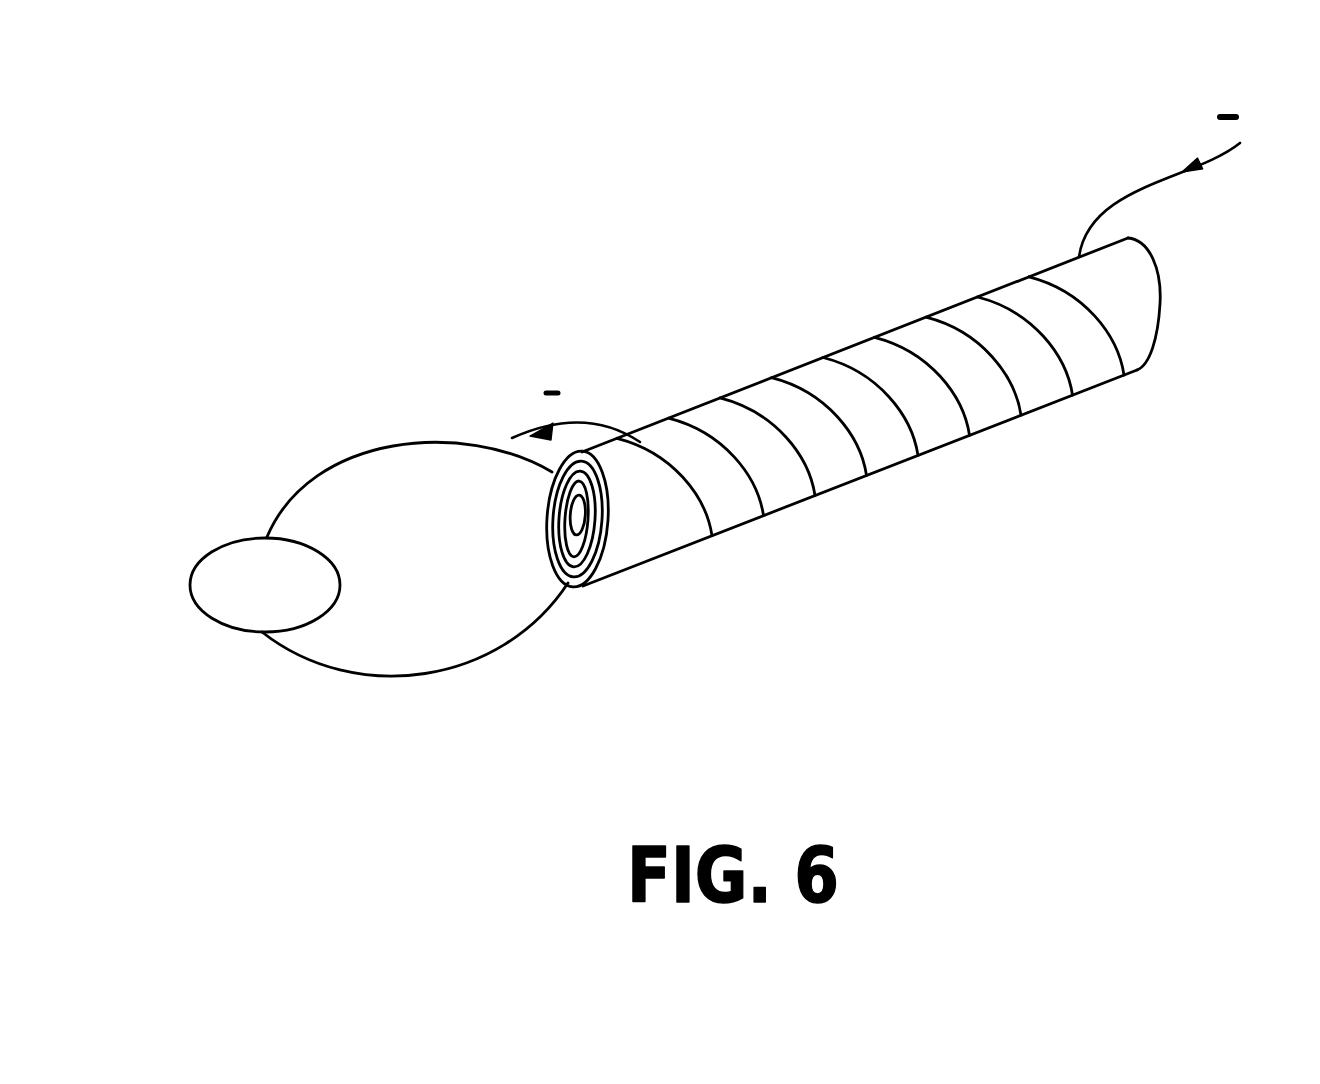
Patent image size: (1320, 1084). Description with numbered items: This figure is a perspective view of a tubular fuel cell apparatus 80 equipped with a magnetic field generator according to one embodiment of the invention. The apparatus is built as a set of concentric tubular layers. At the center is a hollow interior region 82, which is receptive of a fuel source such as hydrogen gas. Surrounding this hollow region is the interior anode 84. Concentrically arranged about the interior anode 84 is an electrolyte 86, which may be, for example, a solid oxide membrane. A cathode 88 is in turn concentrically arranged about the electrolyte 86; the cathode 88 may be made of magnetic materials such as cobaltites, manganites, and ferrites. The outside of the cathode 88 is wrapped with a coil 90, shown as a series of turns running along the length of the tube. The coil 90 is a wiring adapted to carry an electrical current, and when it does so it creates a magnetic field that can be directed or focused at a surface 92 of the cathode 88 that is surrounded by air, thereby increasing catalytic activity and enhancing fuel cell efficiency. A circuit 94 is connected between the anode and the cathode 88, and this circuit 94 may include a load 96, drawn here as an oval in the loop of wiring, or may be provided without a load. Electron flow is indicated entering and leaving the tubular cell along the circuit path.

The tubular fuel cell apparatus 80 is at (708, 230).
The hollow interior region 82 is at (575, 518).
The interior anode 84 is at (550, 491).
The electrolyte 86 is at (553, 560).
The cathode 88 is at (588, 590).
The coil 90 is at (962, 412).
The surface of the cathode 92 is at (623, 550).
The circuit 94 is at (329, 470).
The load 96 is at (238, 560).